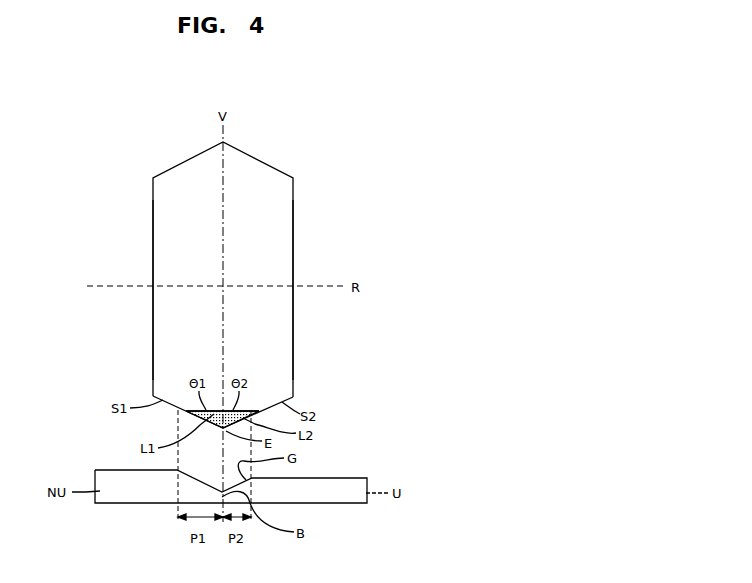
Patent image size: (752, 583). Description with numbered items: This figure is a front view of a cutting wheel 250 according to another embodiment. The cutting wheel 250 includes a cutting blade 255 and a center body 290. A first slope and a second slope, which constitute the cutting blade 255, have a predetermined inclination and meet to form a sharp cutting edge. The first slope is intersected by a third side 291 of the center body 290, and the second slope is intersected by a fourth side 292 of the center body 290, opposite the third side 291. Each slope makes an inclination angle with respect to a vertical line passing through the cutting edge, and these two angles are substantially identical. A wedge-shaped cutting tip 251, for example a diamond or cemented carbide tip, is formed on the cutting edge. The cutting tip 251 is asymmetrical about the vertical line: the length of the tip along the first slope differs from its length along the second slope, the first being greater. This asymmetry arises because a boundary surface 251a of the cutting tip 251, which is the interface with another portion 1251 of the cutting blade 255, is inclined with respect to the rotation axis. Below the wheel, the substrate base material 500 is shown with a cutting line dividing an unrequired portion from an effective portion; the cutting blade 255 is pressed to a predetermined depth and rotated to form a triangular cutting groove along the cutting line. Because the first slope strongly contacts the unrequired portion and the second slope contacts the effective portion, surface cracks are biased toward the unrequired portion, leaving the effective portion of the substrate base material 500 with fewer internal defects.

The cutting wheel 250 is at (258, 163).
The center body 290 is at (273, 224).
The third side 291 is at (152, 256).
The fourth side 292 is at (294, 270).
The another portion of the cutting blade 1251 is at (251, 400).
The cutting tip 251 is at (202, 418).
The boundary surface 251a is at (188, 409).
The cutting blade 255 is at (268, 399).
The substrate base material 500 is at (377, 474).